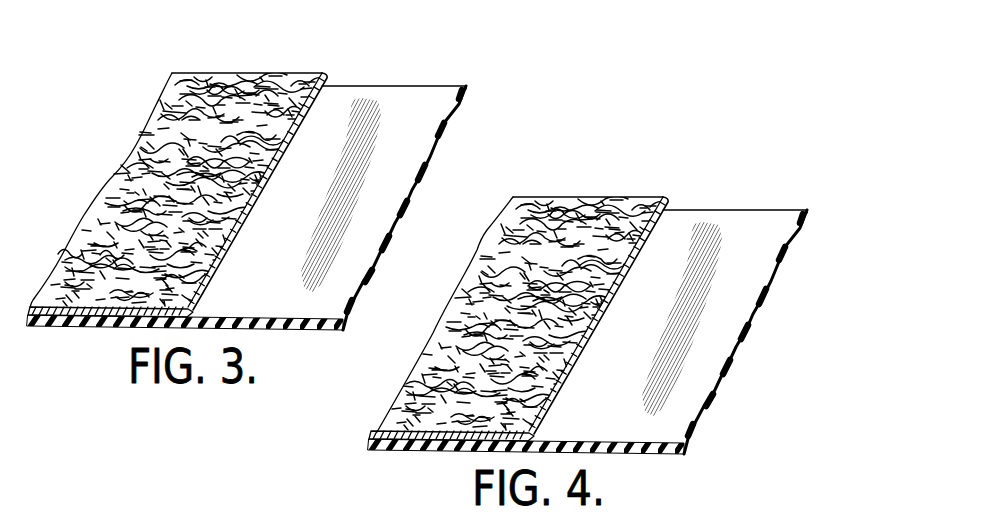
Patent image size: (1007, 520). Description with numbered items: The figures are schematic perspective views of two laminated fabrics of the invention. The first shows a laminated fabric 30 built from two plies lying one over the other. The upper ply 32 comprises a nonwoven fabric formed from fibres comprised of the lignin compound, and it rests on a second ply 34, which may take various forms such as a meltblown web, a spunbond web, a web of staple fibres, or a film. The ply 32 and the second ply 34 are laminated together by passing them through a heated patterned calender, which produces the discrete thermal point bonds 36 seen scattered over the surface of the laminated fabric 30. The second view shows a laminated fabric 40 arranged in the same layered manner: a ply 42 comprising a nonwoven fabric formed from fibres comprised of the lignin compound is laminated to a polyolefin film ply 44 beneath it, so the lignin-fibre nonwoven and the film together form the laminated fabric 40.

In FIG. 3, the laminated fabric 30 is at (100, 150).
In FIG. 3, the ply 32 is at (237, 92).
In FIG. 3, the second ply 34 is at (393, 100).
In FIG. 3, the discrete thermal point bonds 36 is at (68, 252).
In FIG. 4, the laminated fabric 40 is at (536, 187).
In FIG. 4, the ply 42 is at (587, 201).
In FIG. 4, the polyolefin film ply 44 is at (738, 221).